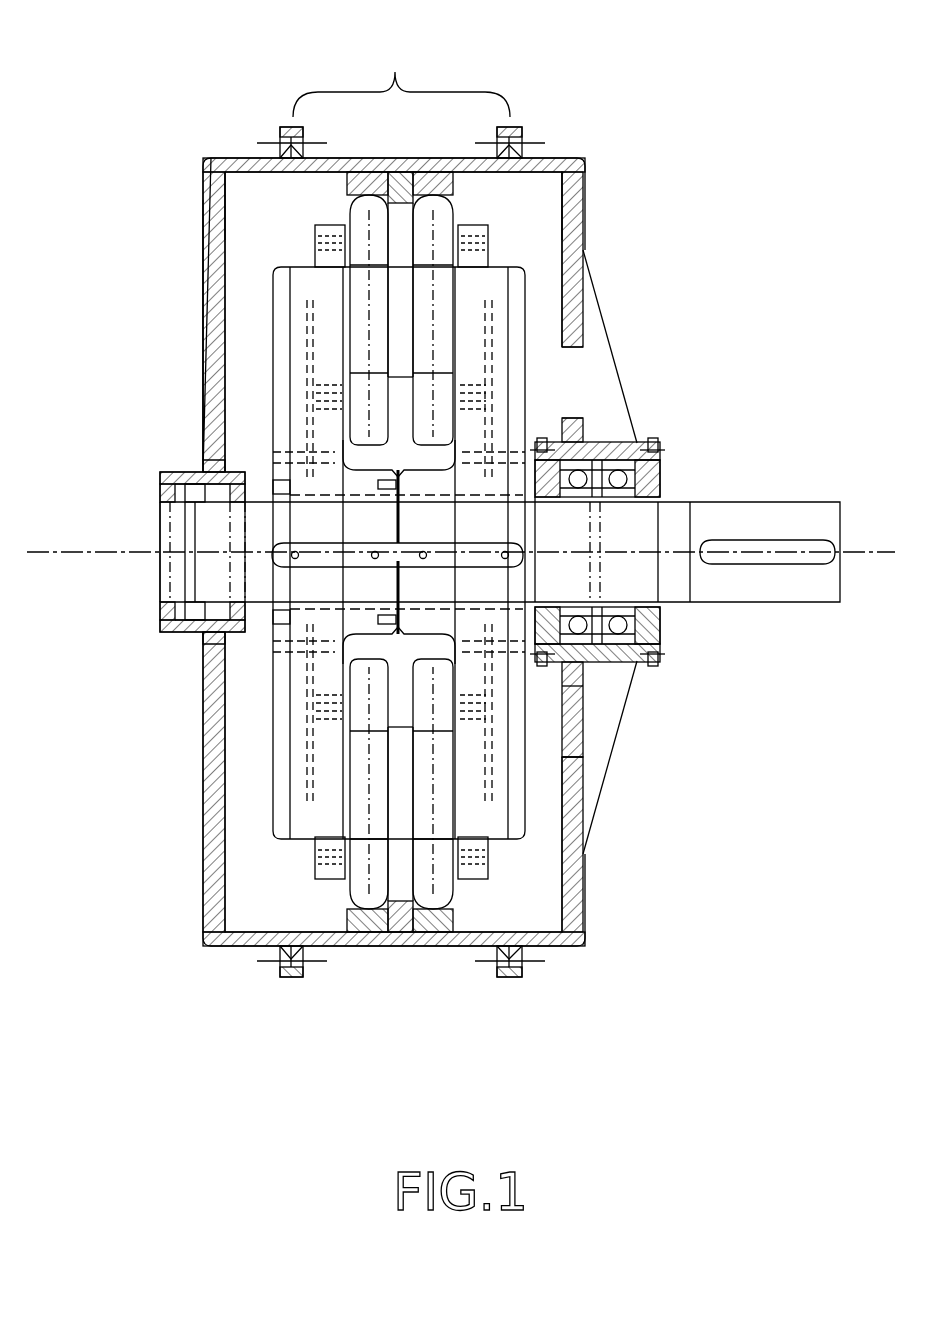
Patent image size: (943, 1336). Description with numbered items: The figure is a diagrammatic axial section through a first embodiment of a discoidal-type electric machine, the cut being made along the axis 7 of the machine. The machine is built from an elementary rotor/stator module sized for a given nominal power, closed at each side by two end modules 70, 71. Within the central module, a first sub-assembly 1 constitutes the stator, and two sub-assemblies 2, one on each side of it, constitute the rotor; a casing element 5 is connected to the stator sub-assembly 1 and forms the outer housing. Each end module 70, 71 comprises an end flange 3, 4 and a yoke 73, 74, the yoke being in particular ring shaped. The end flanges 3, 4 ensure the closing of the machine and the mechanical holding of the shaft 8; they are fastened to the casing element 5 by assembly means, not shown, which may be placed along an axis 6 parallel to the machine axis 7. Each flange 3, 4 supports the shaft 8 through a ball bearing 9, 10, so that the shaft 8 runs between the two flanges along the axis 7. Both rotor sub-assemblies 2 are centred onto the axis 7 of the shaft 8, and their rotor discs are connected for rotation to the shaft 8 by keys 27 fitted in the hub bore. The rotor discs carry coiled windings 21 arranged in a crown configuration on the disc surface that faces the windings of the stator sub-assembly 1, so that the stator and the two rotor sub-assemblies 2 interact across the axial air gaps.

The stator sub-assembly 1 is at (395, 62).
The rotor sub-assembly 2 is at (302, 802).
The end flange 3 is at (205, 298).
The end flange 4 is at (580, 235).
The casing element 5 is at (370, 968).
The axis 6 is at (522, 963).
The axis of the machine 7 is at (64, 556).
The shaft 8 is at (675, 518).
The ball bearing 9 is at (160, 500).
The ball bearing 10 is at (630, 442).
The coiled windings 21 is at (313, 236).
The key 27 is at (432, 548).
The end module 70 is at (238, 150).
The end module 71 is at (567, 142).
The yoke 73 is at (268, 832).
The yoke 74 is at (518, 277).